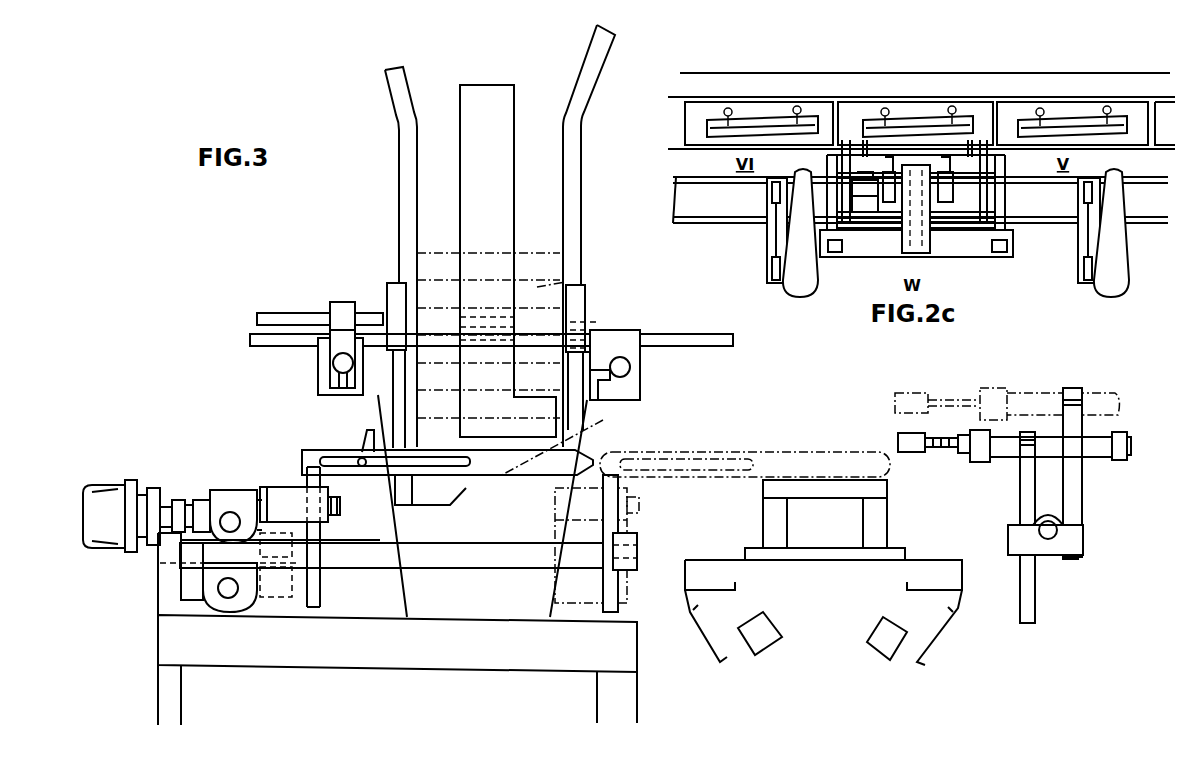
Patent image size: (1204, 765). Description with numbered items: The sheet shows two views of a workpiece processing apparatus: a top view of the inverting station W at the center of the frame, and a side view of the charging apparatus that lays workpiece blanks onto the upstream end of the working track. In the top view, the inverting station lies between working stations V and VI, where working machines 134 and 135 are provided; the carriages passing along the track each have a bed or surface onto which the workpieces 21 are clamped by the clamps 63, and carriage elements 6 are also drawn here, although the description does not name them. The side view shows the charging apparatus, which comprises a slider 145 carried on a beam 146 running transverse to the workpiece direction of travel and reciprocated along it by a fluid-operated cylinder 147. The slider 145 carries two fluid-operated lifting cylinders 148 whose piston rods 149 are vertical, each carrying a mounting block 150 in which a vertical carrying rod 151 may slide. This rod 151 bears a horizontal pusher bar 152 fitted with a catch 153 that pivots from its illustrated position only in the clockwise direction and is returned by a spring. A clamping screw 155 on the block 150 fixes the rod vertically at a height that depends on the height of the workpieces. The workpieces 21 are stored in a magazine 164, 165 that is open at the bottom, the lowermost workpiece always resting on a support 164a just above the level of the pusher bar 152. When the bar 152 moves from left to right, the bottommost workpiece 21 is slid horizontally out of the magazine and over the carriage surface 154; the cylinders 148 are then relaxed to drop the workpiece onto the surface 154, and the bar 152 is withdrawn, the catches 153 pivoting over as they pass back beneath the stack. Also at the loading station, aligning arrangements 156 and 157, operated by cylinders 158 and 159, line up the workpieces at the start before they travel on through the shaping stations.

In FIG. 3, the workpiece holder / pallet 6 is at (712, 568).
In FIG. 2c, the workpiece holder / pallet 6 is at (815, 112).
In FIG. 3, the workpiece 21 is at (537, 297).
In FIG. 2c, the workpiece 21 is at (753, 123).
In FIG. 2c, the clamp 63 is at (882, 113).
In FIG. 2c, the working machine 134 is at (1088, 248).
In FIG. 2c, the working machine 135 is at (778, 238).
In FIG. 3, the slider 145 is at (232, 503).
In FIG. 3, the beam 146 is at (465, 560).
In FIG. 3, the fluid-operated cylinder 147 is at (103, 500).
In FIG. 3, the lifting cylinder 148 is at (277, 580).
In FIG. 3, the piston rod 149 is at (270, 527).
In FIG. 3, the mounting block 150 is at (288, 498).
In FIG. 3, the carrying rod 151 is at (313, 587).
In FIG. 3, the pusher bar 152 is at (565, 465).
In FIG. 3, the catch 153 is at (370, 443).
In FIG. 3, the surface 154 is at (823, 478).
In FIG. 3, the clamping screw 155 is at (338, 516).
In FIG. 3, the aligning arrangement 156 is at (913, 403).
In FIG. 3, the aligning arrangement 157 is at (915, 445).
In FIG. 3, the cylinder 158 is at (1028, 400).
In FIG. 3, the cylinder 159 is at (1095, 448).
In FIG. 3, the magazine 164 is at (400, 216).
In FIG. 3, the support 164a is at (457, 490).
In FIG. 3, the magazine 165 is at (478, 205).